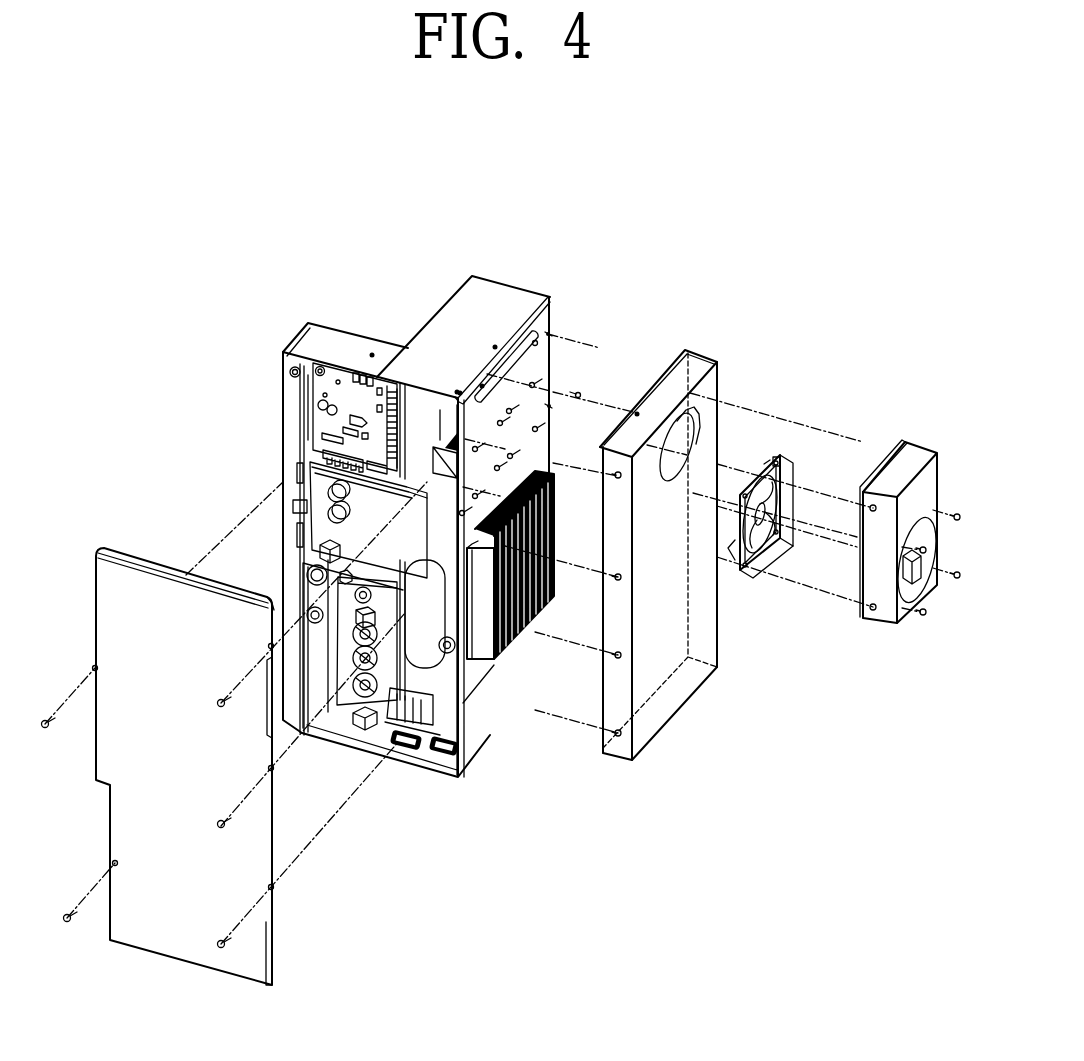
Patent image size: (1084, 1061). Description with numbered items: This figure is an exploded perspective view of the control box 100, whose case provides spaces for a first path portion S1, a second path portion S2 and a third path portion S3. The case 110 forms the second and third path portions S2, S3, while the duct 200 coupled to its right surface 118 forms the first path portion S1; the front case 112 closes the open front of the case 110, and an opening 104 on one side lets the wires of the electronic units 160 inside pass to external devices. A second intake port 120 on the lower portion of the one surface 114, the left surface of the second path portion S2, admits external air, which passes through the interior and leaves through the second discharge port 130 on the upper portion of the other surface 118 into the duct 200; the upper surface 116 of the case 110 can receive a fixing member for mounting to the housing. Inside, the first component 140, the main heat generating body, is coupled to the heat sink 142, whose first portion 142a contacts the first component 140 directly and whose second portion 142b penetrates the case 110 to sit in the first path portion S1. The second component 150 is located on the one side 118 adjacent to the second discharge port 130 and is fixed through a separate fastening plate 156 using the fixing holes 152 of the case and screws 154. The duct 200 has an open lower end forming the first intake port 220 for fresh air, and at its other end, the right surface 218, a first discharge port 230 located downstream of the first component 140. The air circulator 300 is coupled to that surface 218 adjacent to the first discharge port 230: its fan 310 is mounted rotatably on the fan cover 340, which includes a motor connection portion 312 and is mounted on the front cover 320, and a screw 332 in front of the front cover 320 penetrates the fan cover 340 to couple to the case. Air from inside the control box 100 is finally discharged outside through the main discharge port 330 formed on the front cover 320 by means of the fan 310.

The control box 100 is at (536, 154).
The case 110 is at (329, 333).
The opening 104 is at (291, 378).
The front case 112 is at (108, 590).
The one surface 114 is at (455, 293).
The upper surface 116 is at (498, 290).
The right surface 118 is at (548, 314).
The second intake port 120 is at (400, 752).
The second discharge port 130 is at (512, 430).
The first component 140 is at (437, 753).
The heat sink 142 is at (542, 607).
The first portion 142a is at (460, 657).
The second portion 142b is at (500, 645).
The second component 150 is at (420, 384).
The fixing holes 152 is at (540, 433).
The screws 154 is at (578, 393).
The fastening plate 156 is at (467, 396).
The electronic units 160 is at (300, 593).
The duct 200 is at (712, 358).
The right surface of duct 218 is at (710, 387).
The first intake port 220 is at (657, 737).
The first discharge port 230 is at (695, 433).
The air circulator 300 is at (861, 429).
The fan 310 is at (772, 563).
The motor connection portion 312 is at (727, 537).
The front cover 320 is at (873, 573).
The main discharge port 330 is at (892, 586).
The screw 332 is at (924, 618).
The fan cover 340 is at (777, 460).
The first path portion S1 is at (662, 650).
The second path portion S2 is at (436, 408).
The third path portion S3 is at (312, 425).